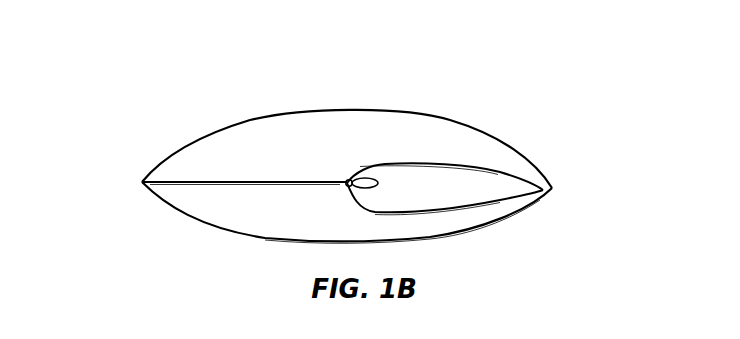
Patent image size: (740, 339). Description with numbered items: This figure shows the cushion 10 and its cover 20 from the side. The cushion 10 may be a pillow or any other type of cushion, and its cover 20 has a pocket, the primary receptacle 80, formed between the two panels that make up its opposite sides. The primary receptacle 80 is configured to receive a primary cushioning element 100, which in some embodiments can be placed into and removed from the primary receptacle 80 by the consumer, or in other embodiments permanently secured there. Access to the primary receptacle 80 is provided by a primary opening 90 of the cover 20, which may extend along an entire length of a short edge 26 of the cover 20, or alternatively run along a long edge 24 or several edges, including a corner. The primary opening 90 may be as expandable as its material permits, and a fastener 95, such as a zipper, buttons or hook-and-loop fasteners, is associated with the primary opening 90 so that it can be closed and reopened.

The cushion 10 is at (100, 128).
The cover 20 is at (178, 144).
The long edge 24 is at (556, 188).
The short edge 26 is at (193, 184).
The primary receptacle 80 is at (458, 192).
The primary opening 90 is at (483, 173).
The fastener 95 is at (350, 186).
The primary cushioning element 100 is at (497, 192).